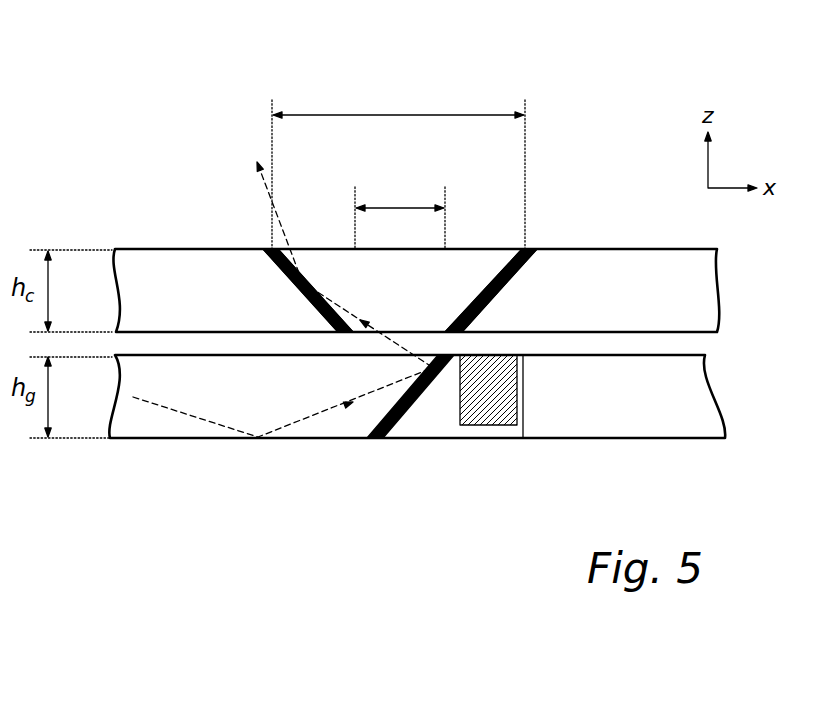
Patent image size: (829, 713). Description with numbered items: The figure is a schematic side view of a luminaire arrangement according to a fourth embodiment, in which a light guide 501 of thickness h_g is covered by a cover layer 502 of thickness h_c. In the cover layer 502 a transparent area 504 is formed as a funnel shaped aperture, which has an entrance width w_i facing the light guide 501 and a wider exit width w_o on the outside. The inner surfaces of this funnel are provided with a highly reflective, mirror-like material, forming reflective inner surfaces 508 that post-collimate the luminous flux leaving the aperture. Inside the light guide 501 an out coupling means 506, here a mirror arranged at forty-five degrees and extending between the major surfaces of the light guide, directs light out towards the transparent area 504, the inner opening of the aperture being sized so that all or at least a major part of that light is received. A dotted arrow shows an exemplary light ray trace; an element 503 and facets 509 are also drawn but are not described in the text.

The light guide 501 is at (262, 440).
The cover layer 502 is at (607, 265).
The light absorbing element 503 is at (488, 410).
The transparent area 504 is at (467, 93).
The out coupling means 506 is at (387, 428).
The reflective inner surfaces 508 is at (302, 273).
The inclined facet 509 is at (290, 283).